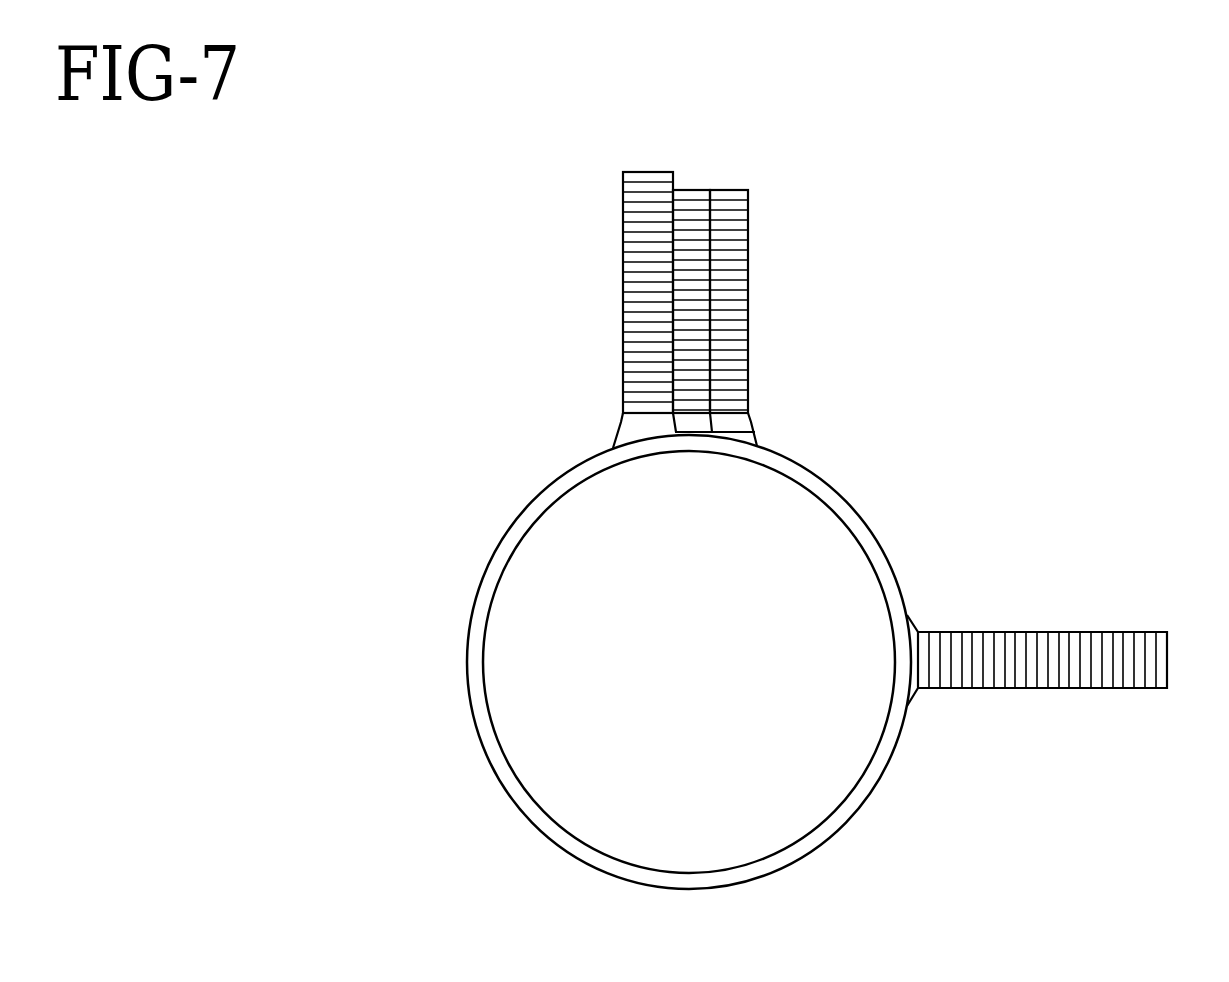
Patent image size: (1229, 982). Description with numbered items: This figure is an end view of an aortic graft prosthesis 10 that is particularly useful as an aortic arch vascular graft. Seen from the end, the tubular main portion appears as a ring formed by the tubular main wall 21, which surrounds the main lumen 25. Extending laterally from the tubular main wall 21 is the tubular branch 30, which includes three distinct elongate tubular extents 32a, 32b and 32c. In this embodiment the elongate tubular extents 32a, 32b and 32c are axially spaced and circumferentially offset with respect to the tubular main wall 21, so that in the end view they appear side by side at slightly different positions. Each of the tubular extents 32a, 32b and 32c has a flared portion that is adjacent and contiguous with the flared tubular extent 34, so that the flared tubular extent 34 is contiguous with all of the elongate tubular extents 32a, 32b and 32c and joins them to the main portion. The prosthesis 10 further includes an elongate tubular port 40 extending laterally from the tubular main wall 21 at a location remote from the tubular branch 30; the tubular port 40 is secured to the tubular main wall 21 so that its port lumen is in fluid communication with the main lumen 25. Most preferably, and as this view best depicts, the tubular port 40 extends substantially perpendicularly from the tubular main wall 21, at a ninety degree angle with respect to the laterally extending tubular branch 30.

The prosthesis 10 is at (388, 221).
The tubular main wall 21 is at (883, 563).
The main lumen 25 is at (555, 628).
The tubular branch 30 is at (800, 340).
The elongate tubular extent 32a is at (647, 213).
The elongate tubular extent 32b is at (688, 186).
The elongate tubular extent 32c is at (730, 248).
The flared tubular extent 34 is at (742, 424).
The elongate tubular port 40 is at (1125, 582).